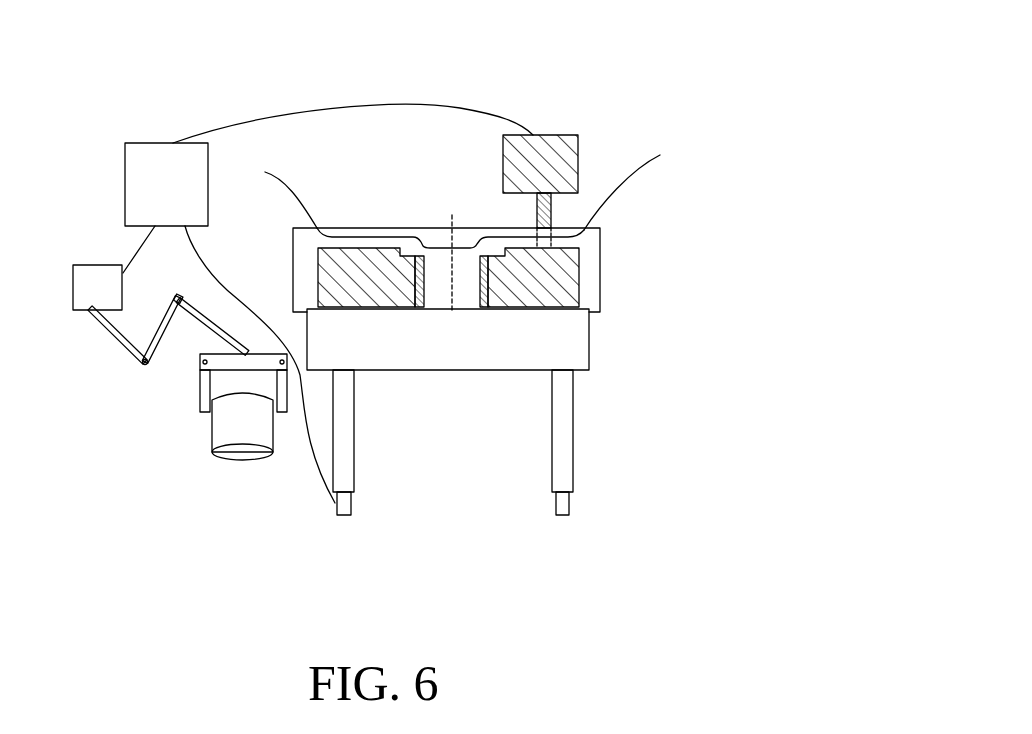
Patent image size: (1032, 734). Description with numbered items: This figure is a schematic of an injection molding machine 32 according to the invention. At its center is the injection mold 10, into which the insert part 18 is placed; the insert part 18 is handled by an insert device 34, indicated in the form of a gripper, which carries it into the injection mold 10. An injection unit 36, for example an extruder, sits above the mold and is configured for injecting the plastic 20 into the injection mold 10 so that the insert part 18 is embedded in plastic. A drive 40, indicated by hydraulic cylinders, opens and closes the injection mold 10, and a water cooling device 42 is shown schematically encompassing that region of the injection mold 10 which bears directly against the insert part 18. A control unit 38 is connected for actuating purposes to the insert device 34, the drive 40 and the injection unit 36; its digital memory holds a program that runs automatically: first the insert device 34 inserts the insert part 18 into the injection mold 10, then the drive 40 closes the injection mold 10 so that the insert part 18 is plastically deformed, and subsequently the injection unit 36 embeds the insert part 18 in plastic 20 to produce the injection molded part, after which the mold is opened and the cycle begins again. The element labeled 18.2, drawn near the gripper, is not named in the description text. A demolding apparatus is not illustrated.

The injection molding machine 32 is at (583, 97).
The injection unit 36 is at (578, 157).
The water cooling device 42 is at (642, 163).
The plastic 20 is at (580, 263).
The injection mold 10 is at (598, 298).
The drive 40 is at (613, 432).
The control unit 38 is at (229, 323).
The insert device 34 is at (137, 420).
The insert part 18 is at (418, 256).
The container holder 18.2 is at (241, 453).